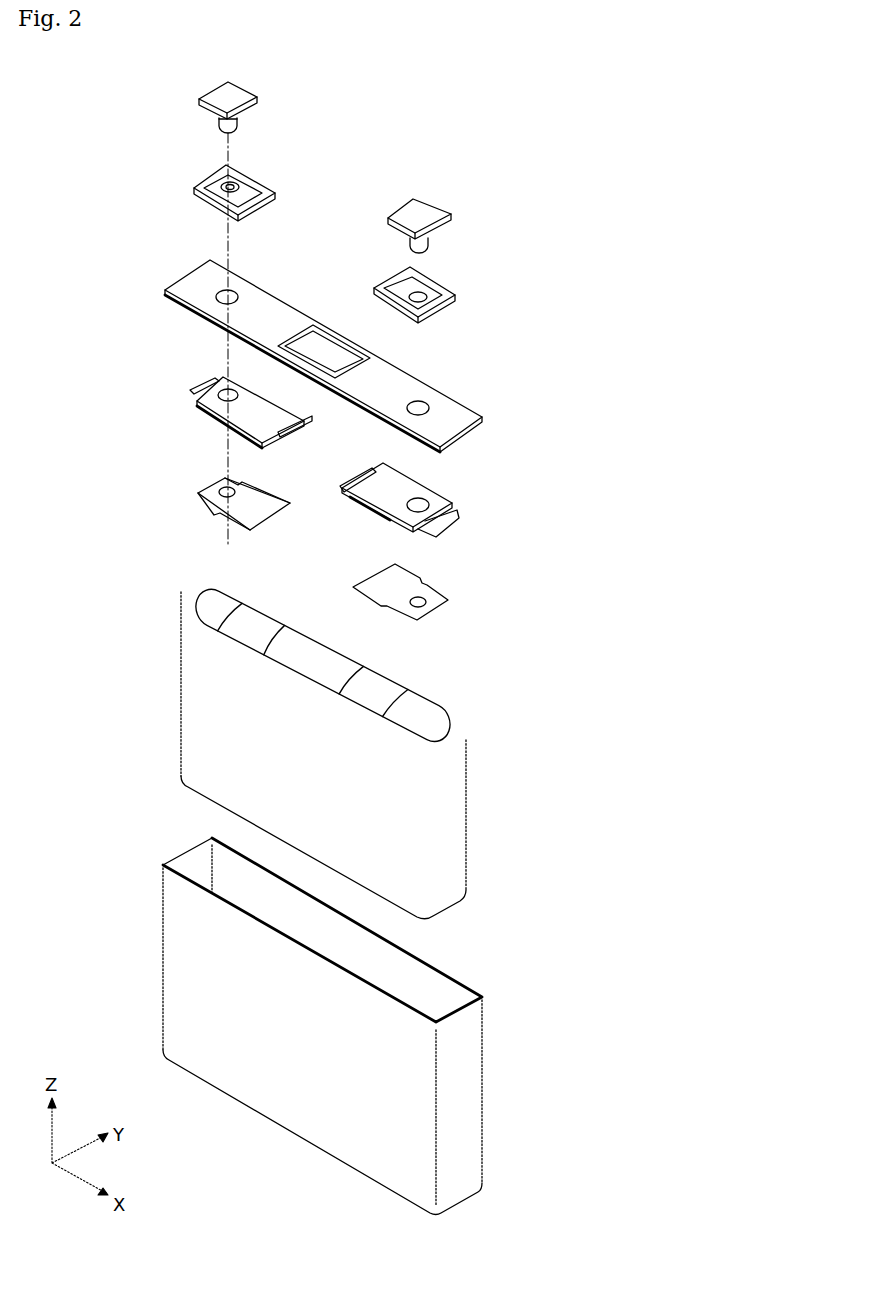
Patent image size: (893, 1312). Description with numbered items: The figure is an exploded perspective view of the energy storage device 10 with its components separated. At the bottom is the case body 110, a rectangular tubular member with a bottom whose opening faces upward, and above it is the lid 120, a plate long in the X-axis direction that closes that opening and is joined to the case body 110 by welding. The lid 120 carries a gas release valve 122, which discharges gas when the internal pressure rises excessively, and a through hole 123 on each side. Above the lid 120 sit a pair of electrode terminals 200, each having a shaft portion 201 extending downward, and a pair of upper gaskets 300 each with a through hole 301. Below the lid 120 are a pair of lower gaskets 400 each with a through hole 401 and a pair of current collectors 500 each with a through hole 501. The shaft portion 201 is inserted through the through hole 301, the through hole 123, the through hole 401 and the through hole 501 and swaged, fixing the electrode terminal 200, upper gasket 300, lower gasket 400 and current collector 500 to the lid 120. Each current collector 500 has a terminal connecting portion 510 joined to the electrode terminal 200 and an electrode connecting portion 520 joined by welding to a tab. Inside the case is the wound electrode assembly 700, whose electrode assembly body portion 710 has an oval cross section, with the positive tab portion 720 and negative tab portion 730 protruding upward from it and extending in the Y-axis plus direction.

The energy storage device 10 is at (483, 121).
The case body 110 is at (484, 1057).
The lid 120 is at (195, 277).
The gas release valve 122 is at (330, 350).
The through hole 123 is at (218, 300).
The electrode terminal 200 is at (229, 93).
The shaft portion 201 is at (238, 125).
The upper gasket 300 is at (212, 170).
The through hole 301 is at (238, 182).
The lower gasket 400 is at (205, 385).
The through hole 401 is at (220, 400).
The current collector 500 is at (203, 484).
The through hole 501 is at (213, 498).
The terminal connecting portion 510 is at (244, 486).
The electrode connecting portion 520 is at (238, 528).
The electrode assembly 700 is at (357, 728).
The electrode assembly body portion 710 is at (322, 772).
The tab portion 720 is at (251, 628).
The tab portion 730 is at (373, 691).